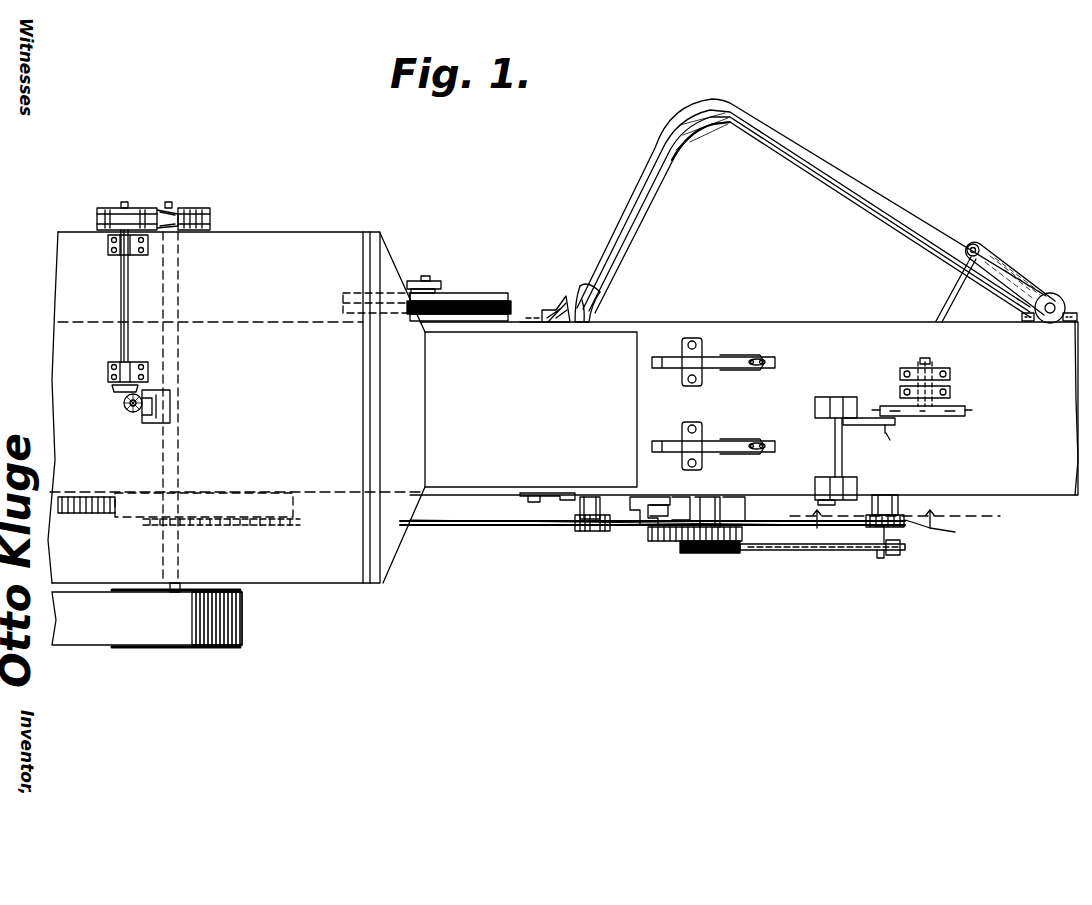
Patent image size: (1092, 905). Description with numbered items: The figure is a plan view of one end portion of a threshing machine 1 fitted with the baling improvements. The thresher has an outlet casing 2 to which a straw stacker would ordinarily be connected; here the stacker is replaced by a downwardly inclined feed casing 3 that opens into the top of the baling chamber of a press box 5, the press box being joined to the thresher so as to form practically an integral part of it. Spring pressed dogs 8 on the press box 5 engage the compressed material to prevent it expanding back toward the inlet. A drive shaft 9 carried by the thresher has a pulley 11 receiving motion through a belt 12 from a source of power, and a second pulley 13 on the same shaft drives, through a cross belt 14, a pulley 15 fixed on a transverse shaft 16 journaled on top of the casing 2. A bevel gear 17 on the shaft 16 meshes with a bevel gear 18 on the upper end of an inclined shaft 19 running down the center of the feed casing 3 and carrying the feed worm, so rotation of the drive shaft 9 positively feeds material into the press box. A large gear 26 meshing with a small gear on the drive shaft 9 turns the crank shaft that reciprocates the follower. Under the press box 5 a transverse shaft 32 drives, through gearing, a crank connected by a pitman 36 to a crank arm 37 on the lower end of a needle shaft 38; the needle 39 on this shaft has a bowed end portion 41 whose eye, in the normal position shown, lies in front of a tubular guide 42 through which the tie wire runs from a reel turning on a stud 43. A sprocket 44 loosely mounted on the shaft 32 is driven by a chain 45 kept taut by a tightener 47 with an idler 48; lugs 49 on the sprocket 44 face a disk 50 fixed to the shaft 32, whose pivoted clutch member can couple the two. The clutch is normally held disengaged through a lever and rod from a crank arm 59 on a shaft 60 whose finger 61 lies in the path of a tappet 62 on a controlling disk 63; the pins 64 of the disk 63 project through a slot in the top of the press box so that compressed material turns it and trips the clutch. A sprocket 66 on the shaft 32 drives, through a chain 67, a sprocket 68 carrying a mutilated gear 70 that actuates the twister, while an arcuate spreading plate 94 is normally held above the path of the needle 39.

The threshing machine 1 is at (68, 232).
The outlet casing 2 is at (327, 238).
The inclined casing 3 is at (531, 409).
The press box 5 is at (818, 321).
The spring pressed dogs 8 is at (680, 340).
The drive shaft 9 is at (183, 586).
The pulley 11 is at (222, 645).
The belt 12 is at (244, 620).
The pulley 13 is at (162, 208).
The cross belt 14 is at (196, 208).
The pulley 15 is at (135, 208).
The transverse shaft 16 is at (122, 292).
The bevel gear 17 is at (112, 388).
The bevel gear 18 is at (150, 425).
The inclined shaft 19 is at (127, 410).
The large gear 26 is at (100, 518).
The shaft 32 is at (882, 552).
The pitman 36 is at (950, 300).
The crank arm 37 is at (1000, 262).
The needle shaft 38 is at (1052, 297).
The needle 39 is at (823, 165).
The bowed end portion 41 is at (585, 286).
The tubular guide 42 is at (560, 302).
The stud 43 is at (428, 278).
The sprocket 44 is at (935, 533).
The chain 45 is at (527, 528).
The tightener 47 is at (582, 494).
The idler 48 is at (595, 534).
The lugs 49 is at (897, 520).
The disk 50 is at (885, 505).
The crank arm 59 is at (826, 492).
The shaft 60 is at (843, 468).
The finger 61 is at (860, 398).
The tappet 62 is at (887, 424).
The controlling disk 63 is at (938, 415).
The pins 64 is at (962, 408).
The sprocket 66 is at (898, 553).
The chain 67 is at (832, 552).
The sprocket 68 is at (695, 545).
The mutilated gear 70 is at (738, 544).
The spreading plate 94 is at (640, 525).